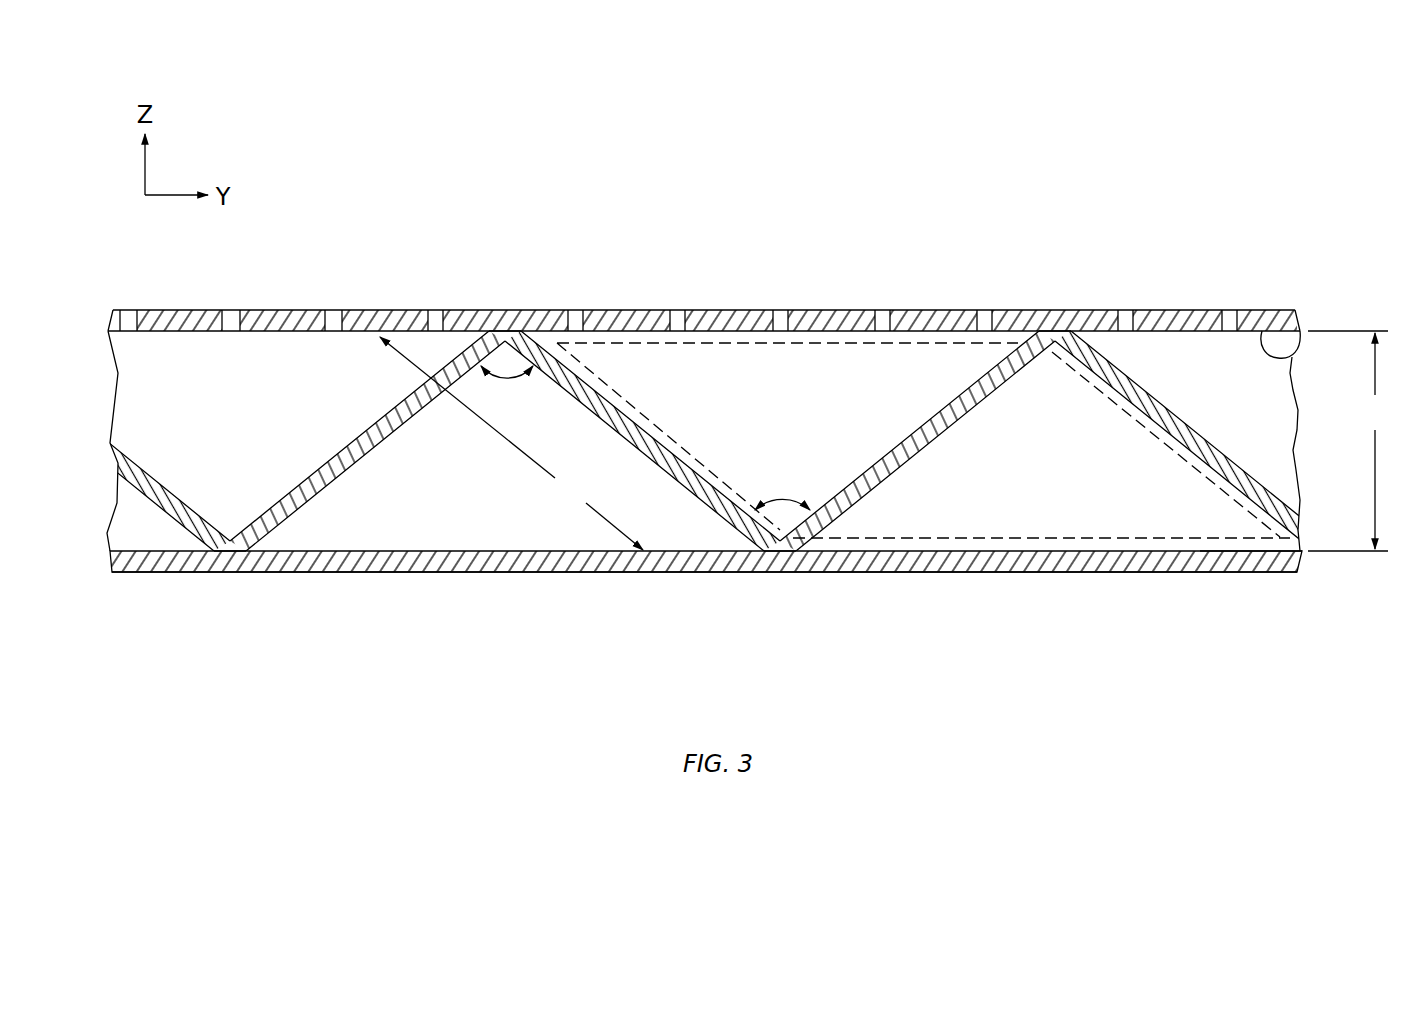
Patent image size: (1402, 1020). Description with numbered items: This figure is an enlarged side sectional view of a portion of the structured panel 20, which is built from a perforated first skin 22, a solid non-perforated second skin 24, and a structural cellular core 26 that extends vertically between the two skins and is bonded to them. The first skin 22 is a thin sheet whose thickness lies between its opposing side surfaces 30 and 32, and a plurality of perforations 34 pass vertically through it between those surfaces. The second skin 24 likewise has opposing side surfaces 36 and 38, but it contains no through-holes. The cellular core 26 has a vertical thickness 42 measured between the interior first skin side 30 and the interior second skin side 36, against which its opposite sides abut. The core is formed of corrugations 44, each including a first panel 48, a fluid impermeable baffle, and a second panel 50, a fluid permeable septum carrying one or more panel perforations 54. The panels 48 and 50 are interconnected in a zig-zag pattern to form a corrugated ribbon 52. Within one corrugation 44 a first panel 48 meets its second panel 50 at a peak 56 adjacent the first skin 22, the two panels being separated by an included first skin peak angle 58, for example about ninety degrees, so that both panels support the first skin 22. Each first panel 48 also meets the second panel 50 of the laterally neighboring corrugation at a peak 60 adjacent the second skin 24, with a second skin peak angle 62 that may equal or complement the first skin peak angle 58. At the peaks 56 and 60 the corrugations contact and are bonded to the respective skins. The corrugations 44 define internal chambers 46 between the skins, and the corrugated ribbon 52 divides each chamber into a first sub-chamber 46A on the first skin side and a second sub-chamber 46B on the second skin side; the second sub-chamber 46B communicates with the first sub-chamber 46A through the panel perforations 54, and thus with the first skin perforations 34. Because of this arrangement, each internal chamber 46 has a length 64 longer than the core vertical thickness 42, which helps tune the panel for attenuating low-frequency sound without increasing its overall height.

The structured panel 20 is at (1134, 177).
The first skin 22 is at (687, 301).
The second skin 24 is at (687, 572).
The cellular core 26 is at (680, 444).
The first skin side surface 30 is at (1296, 357).
The first skin side surface 32 is at (1272, 311).
The perforations 34 is at (132, 310).
The second skin side surface 36 is at (1270, 524).
The second skin side surface 38 is at (1266, 574).
The core vertical thickness 42 is at (1349, 441).
The corrugations 44 is at (581, 368).
The internal chambers 46 is at (435, 538).
The first sub-chamber 46A is at (193, 419).
The second sub-chamber 46B is at (428, 496).
The first panel 48 is at (665, 435).
The second panel 50 is at (303, 508).
The corrugated ribbon 52 is at (1268, 460).
The panel perforations 54 is at (275, 500).
The first skin peak 56 is at (510, 325).
The first skin peak angle 58 is at (508, 382).
The second skin peak 60 is at (228, 556).
The second skin peak angle 62 is at (777, 498).
The length 64 is at (511, 443).